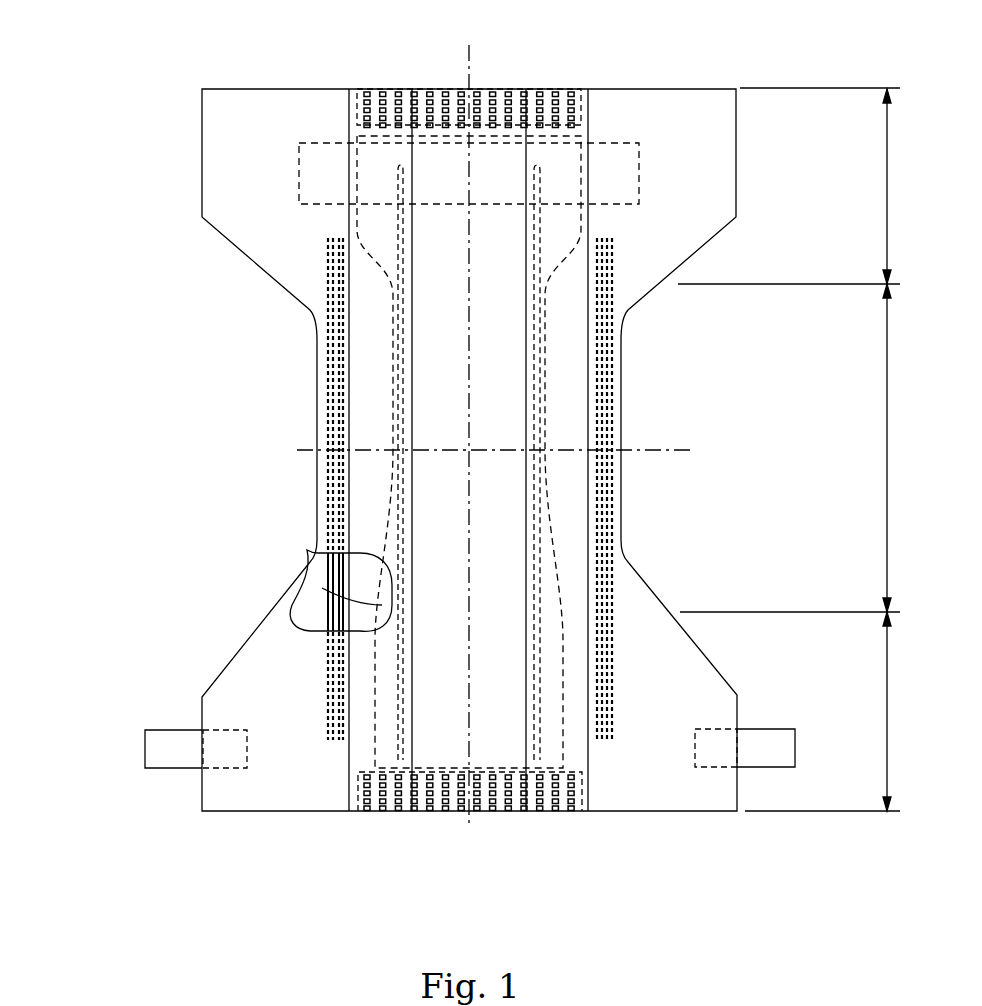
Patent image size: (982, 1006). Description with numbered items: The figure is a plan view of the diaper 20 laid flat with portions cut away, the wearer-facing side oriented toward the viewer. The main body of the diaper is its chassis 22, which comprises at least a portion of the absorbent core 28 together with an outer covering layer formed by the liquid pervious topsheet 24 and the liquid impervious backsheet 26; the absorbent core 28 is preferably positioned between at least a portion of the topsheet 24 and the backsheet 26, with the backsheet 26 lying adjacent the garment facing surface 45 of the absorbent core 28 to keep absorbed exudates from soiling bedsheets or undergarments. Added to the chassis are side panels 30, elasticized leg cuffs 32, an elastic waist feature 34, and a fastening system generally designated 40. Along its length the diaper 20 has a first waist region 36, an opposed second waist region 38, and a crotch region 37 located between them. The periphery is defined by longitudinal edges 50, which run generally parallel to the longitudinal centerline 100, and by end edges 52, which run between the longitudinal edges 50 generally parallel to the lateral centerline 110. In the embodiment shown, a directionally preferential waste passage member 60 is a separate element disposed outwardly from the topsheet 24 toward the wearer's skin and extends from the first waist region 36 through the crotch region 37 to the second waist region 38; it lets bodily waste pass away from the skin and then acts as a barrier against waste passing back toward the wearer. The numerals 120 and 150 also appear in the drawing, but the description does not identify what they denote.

The diaper 20 is at (173, 83).
The chassis 22 is at (469, 451).
The topsheet 24 is at (280, 235).
The backsheet 26 is at (300, 614).
The absorbent core 28 is at (307, 550).
The side panels 30 is at (263, 115).
The elasticized leg cuffs 32 is at (577, 632).
The elastic waist feature 34 is at (558, 90).
The first waist region 36 is at (887, 185).
The crotch region 37 is at (887, 448).
The second waist region 38 is at (887, 711).
The fastening system 40 is at (150, 783).
The garment facing surface 45 is at (383, 581).
The longitudinal edges 50 is at (317, 360).
The end edges 52 is at (420, 89).
The waste passage member 60 is at (500, 342).
The longitudinal centerline 100 is at (472, 57).
The lateral centerline 110 is at (683, 448).
The longitudinal direction 120 is at (443, 718).
The backsheet region 150 is at (437, 750).